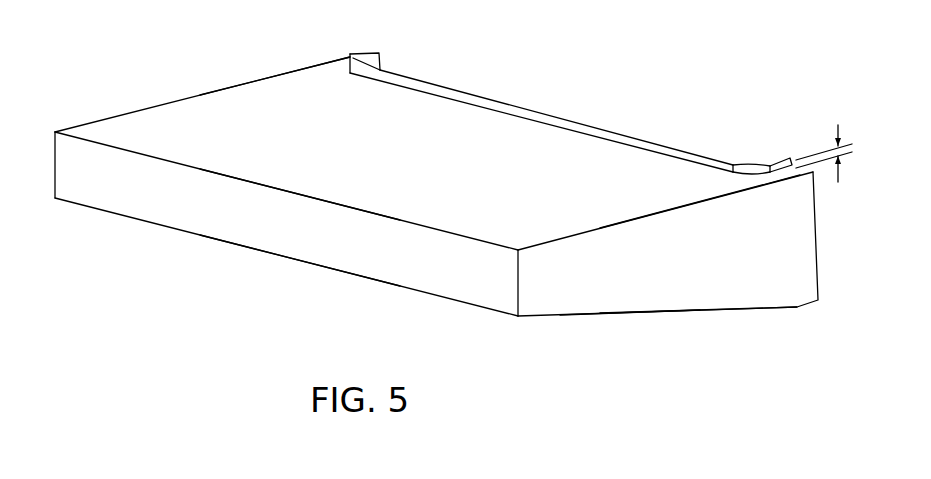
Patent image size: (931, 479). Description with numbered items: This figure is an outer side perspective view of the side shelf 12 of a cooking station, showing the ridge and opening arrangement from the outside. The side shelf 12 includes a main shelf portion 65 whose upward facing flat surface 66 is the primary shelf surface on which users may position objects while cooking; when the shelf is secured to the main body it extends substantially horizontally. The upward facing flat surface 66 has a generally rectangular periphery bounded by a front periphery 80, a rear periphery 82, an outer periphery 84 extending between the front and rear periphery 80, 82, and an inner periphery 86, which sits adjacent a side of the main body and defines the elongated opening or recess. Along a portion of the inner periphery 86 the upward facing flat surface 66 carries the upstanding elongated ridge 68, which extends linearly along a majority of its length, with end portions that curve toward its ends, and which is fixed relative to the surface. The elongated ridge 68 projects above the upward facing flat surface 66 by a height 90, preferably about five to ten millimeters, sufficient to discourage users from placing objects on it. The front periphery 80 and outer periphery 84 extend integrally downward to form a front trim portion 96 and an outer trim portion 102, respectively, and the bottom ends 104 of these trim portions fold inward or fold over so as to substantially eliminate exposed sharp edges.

The side shelf 12 is at (180, 56).
The main shelf portion 65 is at (135, 132).
The rear periphery 82 is at (260, 80).
The upward facing flat surface 66 is at (327, 98).
The outer periphery 84 is at (292, 190).
The outer trim portion 102 is at (352, 271).
The front periphery 80 is at (705, 203).
The front trim portion 96 is at (716, 283).
The bottom ends 104 is at (634, 313).
The upstanding elongated ridge 68 is at (562, 110).
The inner periphery 86 is at (483, 107).
The height 90 is at (838, 125).